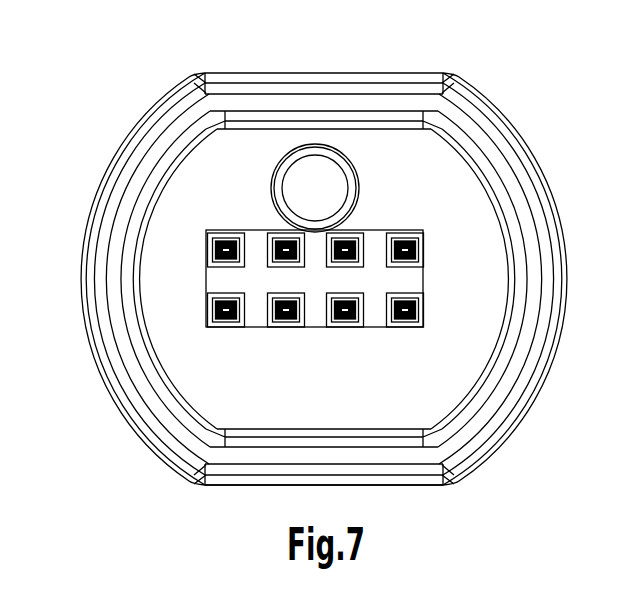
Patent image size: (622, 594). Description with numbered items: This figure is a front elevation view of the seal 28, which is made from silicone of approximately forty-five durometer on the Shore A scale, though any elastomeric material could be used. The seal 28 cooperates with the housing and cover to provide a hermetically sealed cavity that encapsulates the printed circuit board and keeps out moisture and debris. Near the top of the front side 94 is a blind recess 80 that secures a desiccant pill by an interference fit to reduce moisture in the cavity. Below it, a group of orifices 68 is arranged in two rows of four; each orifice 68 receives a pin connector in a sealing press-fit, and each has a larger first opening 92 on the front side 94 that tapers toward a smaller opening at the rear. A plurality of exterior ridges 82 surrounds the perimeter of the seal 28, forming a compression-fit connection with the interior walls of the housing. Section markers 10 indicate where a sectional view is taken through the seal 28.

The section line indicator 10 is at (283, 60).
The seal 28 is at (498, 85).
The orifice 68 is at (207, 280).
The blind recess 80 is at (312, 172).
The exterior ridges 82 is at (565, 323).
The first opening 92 is at (280, 240).
The front side 94 is at (432, 495).